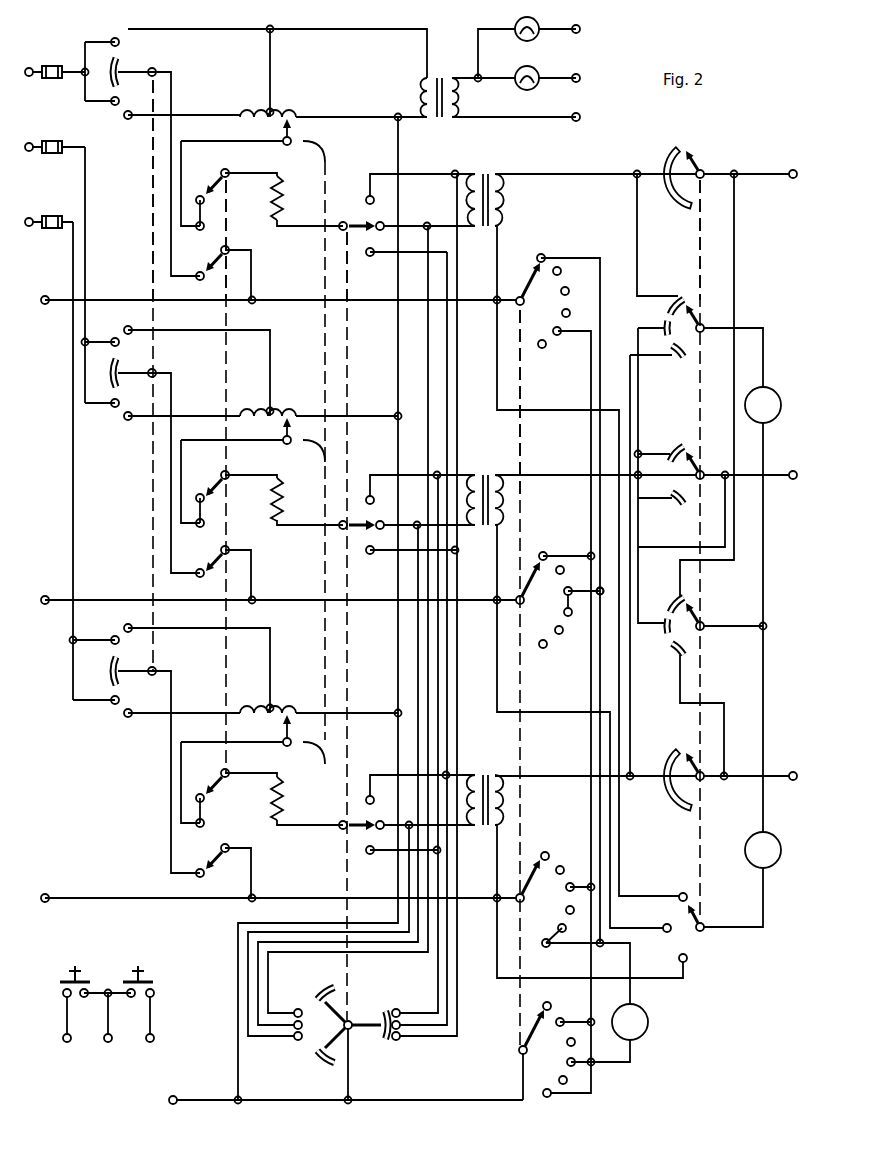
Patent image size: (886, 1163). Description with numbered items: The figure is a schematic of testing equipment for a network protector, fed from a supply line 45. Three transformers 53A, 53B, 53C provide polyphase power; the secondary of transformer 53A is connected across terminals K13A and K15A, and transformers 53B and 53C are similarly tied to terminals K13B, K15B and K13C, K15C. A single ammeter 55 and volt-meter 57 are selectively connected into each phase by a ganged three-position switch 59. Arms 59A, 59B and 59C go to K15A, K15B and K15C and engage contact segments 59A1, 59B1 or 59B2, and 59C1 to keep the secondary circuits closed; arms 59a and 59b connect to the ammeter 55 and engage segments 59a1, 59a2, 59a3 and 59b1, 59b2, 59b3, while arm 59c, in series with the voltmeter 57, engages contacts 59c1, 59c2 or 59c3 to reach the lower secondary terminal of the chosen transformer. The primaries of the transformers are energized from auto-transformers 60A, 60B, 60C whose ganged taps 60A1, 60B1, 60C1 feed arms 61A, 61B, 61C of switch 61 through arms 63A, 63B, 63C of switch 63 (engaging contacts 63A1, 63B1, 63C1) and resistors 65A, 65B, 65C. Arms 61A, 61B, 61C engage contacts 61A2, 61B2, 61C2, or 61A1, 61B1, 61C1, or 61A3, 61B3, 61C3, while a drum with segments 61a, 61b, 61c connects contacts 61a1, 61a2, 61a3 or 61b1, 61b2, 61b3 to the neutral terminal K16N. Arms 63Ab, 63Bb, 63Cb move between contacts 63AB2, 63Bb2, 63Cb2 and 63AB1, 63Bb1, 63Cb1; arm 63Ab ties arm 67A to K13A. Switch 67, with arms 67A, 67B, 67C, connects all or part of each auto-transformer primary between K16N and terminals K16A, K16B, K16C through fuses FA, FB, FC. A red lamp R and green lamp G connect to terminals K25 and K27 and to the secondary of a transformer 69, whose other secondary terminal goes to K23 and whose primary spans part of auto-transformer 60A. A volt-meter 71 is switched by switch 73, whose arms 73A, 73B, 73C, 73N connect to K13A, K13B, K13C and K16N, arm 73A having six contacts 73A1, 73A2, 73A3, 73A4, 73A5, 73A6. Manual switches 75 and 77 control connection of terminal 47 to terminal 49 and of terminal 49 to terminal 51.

The supply line 45 is at (382, 21).
The terminal 47 is at (69, 1043).
The terminal 49 is at (111, 1043).
The terminal 51 is at (153, 1043).
The transformer 53A is at (484, 187).
The transformer 53B is at (487, 474).
The transformer 53C is at (489, 766).
The ammeter 55 is at (774, 392).
The volt-meter 57 is at (752, 838).
The switch 59 is at (694, 138).
The switch arm 59A is at (704, 172).
The contact segment 59A1 is at (672, 162).
The switch arm 59a is at (702, 322).
The contact segment 59a1 is at (678, 302).
The contact segment 59a2 is at (663, 322).
The contact segment 59a3 is at (676, 360).
The switch arm 59B is at (702, 470).
The contact segment 59B1 is at (686, 444).
The contact segment 59B2 is at (658, 512).
The switch arm 59b is at (704, 623).
The contact segment 59b1 is at (672, 600).
The contact segment 59b2 is at (660, 639).
The contact segment 59b3 is at (688, 654).
The switch arm 59C is at (704, 762).
The contact segment 59C1 is at (670, 790).
The switch arm 59c is at (700, 920).
The contact 59c1 is at (683, 893).
The contact 59c2 is at (663, 928).
The contact 59c3 is at (688, 958).
The auto-transformer 60A is at (288, 112).
The adjustable tap 60A1 is at (291, 141).
The auto-transformer 60B is at (288, 411).
The adjustable tap 60B1 is at (283, 440).
The auto-transformer 60C is at (296, 702).
The adjustable tap 60C1 is at (283, 742).
The switch 61 is at (366, 183).
The switch arm 61A is at (354, 224).
The contact 61A1 is at (374, 198).
The contact 61A2 is at (384, 226).
The contact 61A3 is at (367, 255).
The switch arm 61B is at (353, 522).
The contact 61B1 is at (368, 496).
The contact 61B2 is at (384, 529).
The contact 61B3 is at (367, 554).
The switch arm 61C is at (354, 822).
The contact 61C1 is at (368, 796).
The contact 61C2 is at (377, 829).
The contact 61C3 is at (367, 853).
The contact segment 61a is at (380, 1016).
The contact 61a1 is at (407, 1000).
The contact 61a2 is at (399, 1029).
The contact 61a3 is at (397, 1041).
The contact segment 61b is at (328, 1062).
The contact 61b1 is at (296, 1009).
The contact 61b2 is at (295, 1028).
The contact 61b3 is at (299, 1041).
The contact segment 61c is at (327, 990).
The switch 63 is at (255, 235).
The switch arm 63A is at (215, 185).
The contact 63A1 is at (196, 200).
The contact 63AB1 is at (196, 227).
The switch arm 63Ab is at (212, 270).
The contact 63AB2 is at (203, 280).
The switch arm 63B is at (215, 485).
The contact 63B1 is at (205, 500).
The switch arm 63Bb is at (212, 566).
The contact 63Bb1 is at (205, 526).
The contact 63Bb2 is at (204, 578).
The switch arm 63C is at (215, 784).
The contact 63C1 is at (205, 799).
The switch arm 63Cb is at (213, 862).
The contact 63Cb1 is at (205, 825).
The contact 63Cb2 is at (198, 878).
The resistor 65A is at (283, 200).
The resistor 65B is at (283, 500).
The resistor 65C is at (283, 802).
The switch 67 is at (152, 180).
The switch arm 67A is at (134, 72).
The switch arm 67B is at (134, 373).
The switch arm 67C is at (134, 678).
The transformer 69 is at (437, 80).
The volt-meter 71 is at (647, 1021).
The switch 73 is at (540, 445).
The switch arm 73A is at (528, 281).
The contact 73A1 is at (539, 254).
The contact 73A2 is at (557, 267).
The contact 73A3 is at (567, 287).
The contact 73A4 is at (547, 304).
The contact 73A5 is at (560, 336).
The contact 73A6 is at (538, 347).
The switch arm 73B is at (538, 565).
The switch arm 73C is at (530, 880).
The switch arm 73N is at (528, 1036).
The manually-operated switch 75 is at (73, 972).
The manually-operated switch 77 is at (141, 972).
The terminal K16A is at (30, 68).
The terminal K16B is at (30, 143).
The terminal K16C is at (30, 218).
The neutral terminal K16N is at (170, 1096).
The terminal K13A is at (46, 296).
The terminal K13B is at (46, 596).
The terminal K13C is at (48, 894).
The terminal K15A is at (792, 170).
The terminal K15B is at (792, 471).
The terminal K15C is at (792, 772).
The terminal K25 is at (595, 30).
The terminal K27 is at (595, 79).
The terminal K23 is at (595, 118).
The fuse FA is at (52, 79).
The fuse FB is at (52, 154).
The fuse FC is at (52, 229).
The red lamp R is at (518, 19).
The green lamp G is at (518, 68).